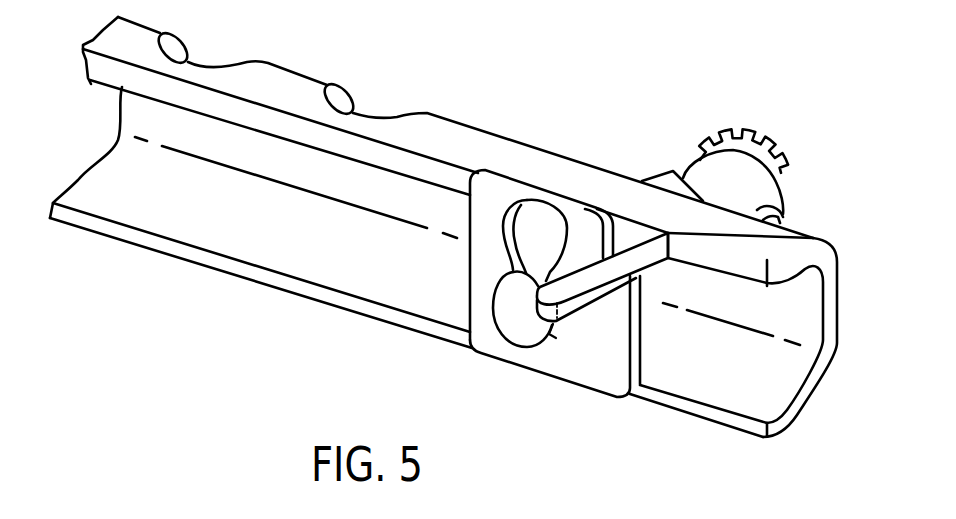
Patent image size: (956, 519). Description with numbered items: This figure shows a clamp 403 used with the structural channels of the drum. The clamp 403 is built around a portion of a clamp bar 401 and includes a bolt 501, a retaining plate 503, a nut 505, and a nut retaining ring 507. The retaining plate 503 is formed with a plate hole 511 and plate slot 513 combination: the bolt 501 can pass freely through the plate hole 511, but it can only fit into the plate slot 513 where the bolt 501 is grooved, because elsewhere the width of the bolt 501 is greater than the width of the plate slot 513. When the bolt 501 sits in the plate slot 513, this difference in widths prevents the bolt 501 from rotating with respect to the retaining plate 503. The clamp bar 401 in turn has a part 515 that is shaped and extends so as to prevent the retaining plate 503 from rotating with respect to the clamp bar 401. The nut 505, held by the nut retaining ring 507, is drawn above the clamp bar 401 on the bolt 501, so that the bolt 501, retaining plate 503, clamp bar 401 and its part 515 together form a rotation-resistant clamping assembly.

The clamp bar 401 is at (237, 233).
The clamp 403 is at (626, 234).
The bolt 501 is at (510, 332).
The retaining plate 503 is at (475, 278).
The nut 505 is at (667, 175).
The nut retaining ring 507 is at (770, 142).
The plate hole 511 is at (525, 232).
The plate slot 513 is at (552, 335).
The part of clamp bar 515 is at (595, 292).